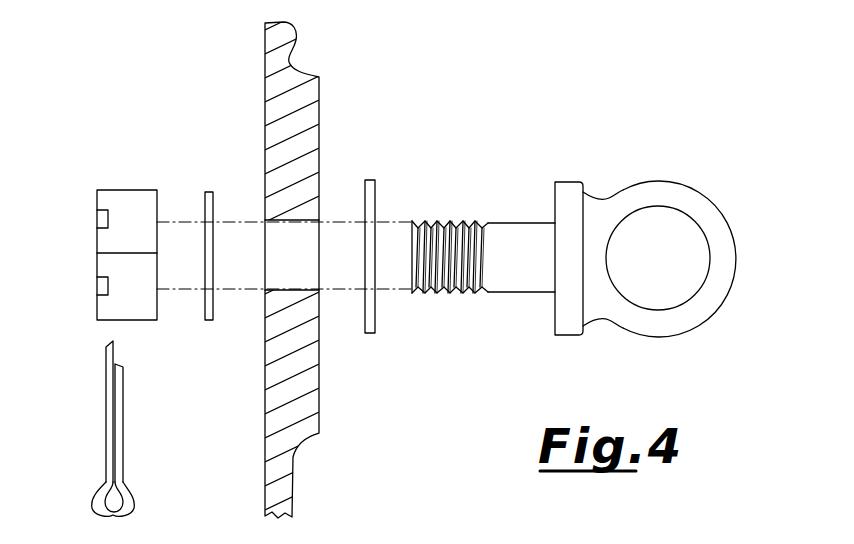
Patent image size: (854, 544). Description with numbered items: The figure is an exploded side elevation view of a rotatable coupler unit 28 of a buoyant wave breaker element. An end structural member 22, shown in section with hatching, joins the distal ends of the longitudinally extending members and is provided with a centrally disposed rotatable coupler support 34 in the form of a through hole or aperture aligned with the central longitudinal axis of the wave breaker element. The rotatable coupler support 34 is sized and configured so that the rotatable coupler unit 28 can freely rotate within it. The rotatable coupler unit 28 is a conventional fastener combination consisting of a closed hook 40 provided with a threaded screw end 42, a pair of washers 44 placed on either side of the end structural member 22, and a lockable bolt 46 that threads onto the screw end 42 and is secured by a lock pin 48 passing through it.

The end structural member 22 is at (306, 47).
The rotatable coupler unit 28 is at (576, 206).
The rotatable coupler support 34 is at (318, 219).
The closed hook 40 is at (680, 195).
The threaded screw end 42 is at (526, 222).
The washer 44 is at (213, 191).
The lockable bolt 46 is at (126, 198).
The lock pin 48 is at (100, 425).